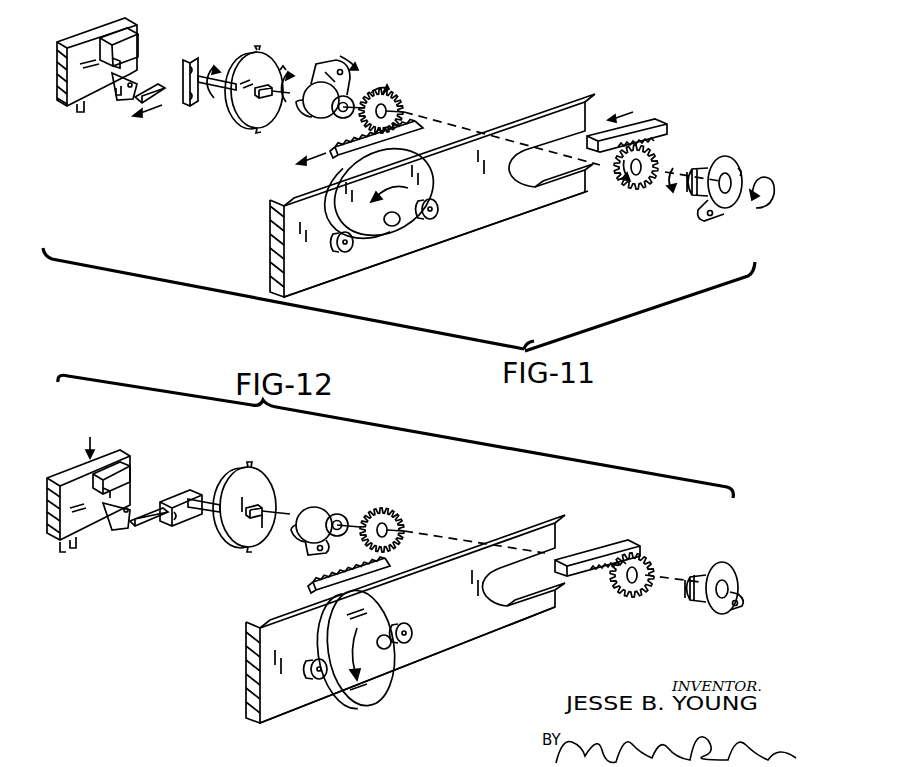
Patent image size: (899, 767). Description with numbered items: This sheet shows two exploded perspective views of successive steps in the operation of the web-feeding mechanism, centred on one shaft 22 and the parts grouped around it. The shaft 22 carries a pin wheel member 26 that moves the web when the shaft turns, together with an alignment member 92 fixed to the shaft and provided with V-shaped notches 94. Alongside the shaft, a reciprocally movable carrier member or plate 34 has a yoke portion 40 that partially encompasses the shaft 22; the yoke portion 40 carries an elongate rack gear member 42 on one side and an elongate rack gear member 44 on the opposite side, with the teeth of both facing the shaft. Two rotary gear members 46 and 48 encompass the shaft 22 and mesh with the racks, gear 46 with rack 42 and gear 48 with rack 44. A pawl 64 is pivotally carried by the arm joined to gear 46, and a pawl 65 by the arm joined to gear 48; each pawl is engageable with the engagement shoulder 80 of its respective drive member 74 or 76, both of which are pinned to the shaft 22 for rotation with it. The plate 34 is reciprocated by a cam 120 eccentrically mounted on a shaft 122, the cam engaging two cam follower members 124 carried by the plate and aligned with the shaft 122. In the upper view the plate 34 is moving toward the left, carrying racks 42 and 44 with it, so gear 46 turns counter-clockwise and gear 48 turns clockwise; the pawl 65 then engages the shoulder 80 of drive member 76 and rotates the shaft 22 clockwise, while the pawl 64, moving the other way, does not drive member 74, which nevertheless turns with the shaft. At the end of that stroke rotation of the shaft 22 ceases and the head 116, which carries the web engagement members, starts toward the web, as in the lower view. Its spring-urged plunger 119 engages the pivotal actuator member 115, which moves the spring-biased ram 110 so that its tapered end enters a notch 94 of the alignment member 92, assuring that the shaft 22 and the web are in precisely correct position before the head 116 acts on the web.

In FIG. 11, the head 116 is at (72, 41).
In FIG. 12, the head 116 is at (60, 478).
In FIG. 11, the plunger 119 is at (118, 66).
In FIG. 12, the plunger 119 is at (122, 490).
In FIG. 11, the pivotal actuator member 115 is at (120, 98).
In FIG. 12, the pivotal actuator member 115 is at (125, 530).
In FIG. 11, the ram 110 is at (166, 100).
In FIG. 12, the ram 110 is at (150, 515).
In FIG. 11, the V-shaped notches 94 is at (190, 60).
In FIG. 12, the V-shaped notches 94 is at (200, 492).
In FIG. 11, the alignment member 92 is at (205, 74).
In FIG. 12, the alignment member 92 is at (183, 490).
In FIG. 11, the pin wheel member 26 is at (263, 52).
In FIG. 12, the pin wheel member 26 is at (233, 545).
In FIG. 11, the shaft 22 is at (256, 100).
In FIG. 12, the shaft 22 is at (258, 508).
In FIG. 11, the pawl 65 is at (326, 66).
In FIG. 12, the pawl 65 is at (312, 553).
In FIG. 11, the drive member 76 is at (320, 118).
In FIG. 12, the drive member 76 is at (334, 512).
In FIG. 11, the rotary gear member 48 is at (382, 88).
In FIG. 12, the rotary gear member 48 is at (382, 508).
In FIG. 11, the rack gear member 44 is at (412, 122).
In FIG. 12, the rack gear member 44 is at (320, 576).
In FIG. 11, the yoke portion 40 is at (560, 105).
In FIG. 12, the yoke portion 40 is at (534, 520).
In FIG. 11, the carrier member or plate 34 is at (498, 222).
In FIG. 12, the carrier member or plate 34 is at (480, 636).
In FIG. 11, the cam 120 is at (330, 186).
In FIG. 12, the cam 120 is at (363, 700).
In FIG. 11, the shaft 122 is at (396, 226).
In FIG. 12, the shaft 122 is at (388, 650).
In FIG. 11, the cam follower members 124 is at (484, 179).
In FIG. 12, the cam follower members 124 is at (408, 624).
In FIG. 11, the rack gear member 42 is at (648, 122).
In FIG. 12, the rack gear member 42 is at (586, 552).
In FIG. 11, the rotary gear member 46 is at (634, 190).
In FIG. 12, the rotary gear member 46 is at (640, 556).
In FIG. 11, the drive member 74 is at (720, 158).
In FIG. 12, the drive member 74 is at (722, 562).
In FIG. 11, the engagement shoulder 80 is at (741, 168).
In FIG. 11, the pawl 64 is at (712, 222).
In FIG. 12, the pawl 64 is at (740, 598).